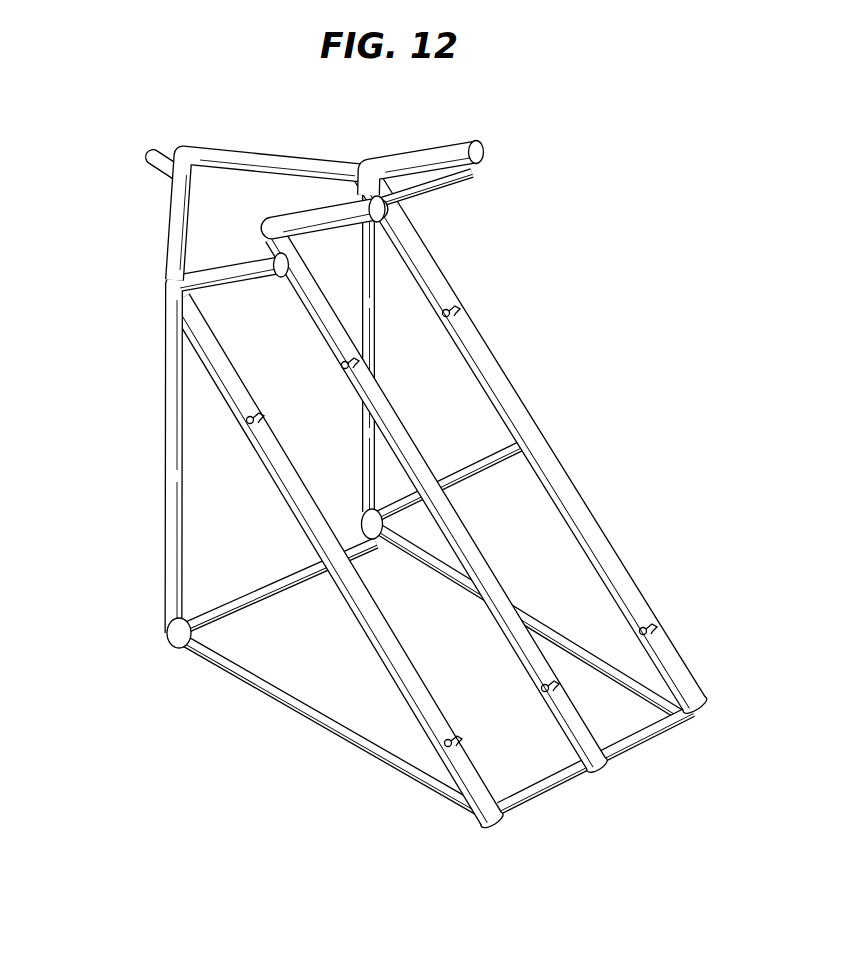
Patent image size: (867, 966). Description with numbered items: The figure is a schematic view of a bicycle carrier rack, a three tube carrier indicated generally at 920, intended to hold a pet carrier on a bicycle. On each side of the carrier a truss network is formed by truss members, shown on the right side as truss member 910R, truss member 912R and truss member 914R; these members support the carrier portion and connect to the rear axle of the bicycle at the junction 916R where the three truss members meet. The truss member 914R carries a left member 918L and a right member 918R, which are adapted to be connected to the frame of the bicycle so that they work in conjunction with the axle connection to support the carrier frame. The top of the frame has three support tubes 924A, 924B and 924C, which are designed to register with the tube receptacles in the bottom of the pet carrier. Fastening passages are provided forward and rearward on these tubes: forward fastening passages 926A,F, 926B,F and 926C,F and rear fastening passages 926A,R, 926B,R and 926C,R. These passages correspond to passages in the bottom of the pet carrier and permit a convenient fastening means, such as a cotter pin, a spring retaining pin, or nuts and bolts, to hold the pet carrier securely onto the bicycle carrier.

The truss member 910R is at (272, 698).
The truss member 912R is at (268, 582).
The truss member 914R is at (165, 488).
The junction 916R is at (180, 650).
The left member 918L is at (262, 148).
The right member 918R is at (165, 206).
The three tube carrier 920 is at (158, 631).
The support tube 924A is at (588, 516).
The support tube 924B is at (493, 572).
The support tube 924C is at (405, 645).
The forward fastening passage 926A,F is at (460, 308).
The forward fastening passage 926B,F is at (358, 378).
The forward fastening passage 926C,F is at (245, 418).
The rear fastening passage 926A,R is at (655, 630).
The rear fastening passage 926B,R is at (575, 696).
The rear fastening passage 926C,R is at (468, 748).